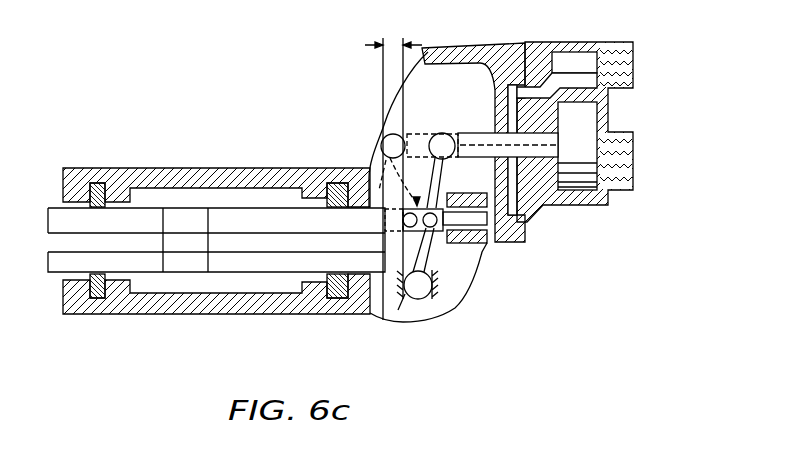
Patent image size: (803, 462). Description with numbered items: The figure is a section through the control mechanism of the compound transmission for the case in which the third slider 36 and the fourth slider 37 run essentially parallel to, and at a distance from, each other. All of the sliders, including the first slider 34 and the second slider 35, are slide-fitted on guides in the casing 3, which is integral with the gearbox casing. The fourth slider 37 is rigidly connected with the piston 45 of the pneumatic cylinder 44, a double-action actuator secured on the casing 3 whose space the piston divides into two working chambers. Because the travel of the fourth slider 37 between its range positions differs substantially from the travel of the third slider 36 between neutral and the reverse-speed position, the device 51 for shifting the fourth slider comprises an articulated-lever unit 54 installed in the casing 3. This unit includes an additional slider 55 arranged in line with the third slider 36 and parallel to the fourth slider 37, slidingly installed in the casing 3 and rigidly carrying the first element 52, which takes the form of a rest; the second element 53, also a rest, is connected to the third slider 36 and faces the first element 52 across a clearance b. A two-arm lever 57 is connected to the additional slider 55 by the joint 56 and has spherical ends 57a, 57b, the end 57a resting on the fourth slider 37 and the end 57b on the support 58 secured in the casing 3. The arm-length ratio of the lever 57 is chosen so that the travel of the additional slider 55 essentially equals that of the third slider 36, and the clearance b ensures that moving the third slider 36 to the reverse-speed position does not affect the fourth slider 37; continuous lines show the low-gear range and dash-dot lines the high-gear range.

The casing 3 is at (173, 168).
The first slider 34 is at (225, 265).
The second slider 35 is at (252, 248).
The third slider 36 is at (234, 215).
The fourth slider 37 is at (468, 132).
The pneumatic cylinder 44 is at (585, 140).
The piston 45 is at (578, 173).
The device for moving the fourth slider 51 is at (381, 151).
The first element 52 is at (371, 165).
The second element 53 is at (405, 232).
The articulated-lever unit 54 is at (442, 241).
The additional slider 55 is at (482, 232).
The joint 56 is at (437, 236).
The two-arm lever 57 is at (438, 179).
The spherical end 57a is at (440, 132).
The spherical end 57b is at (425, 296).
The support 58 is at (398, 310).
The clearance b is at (388, 166).